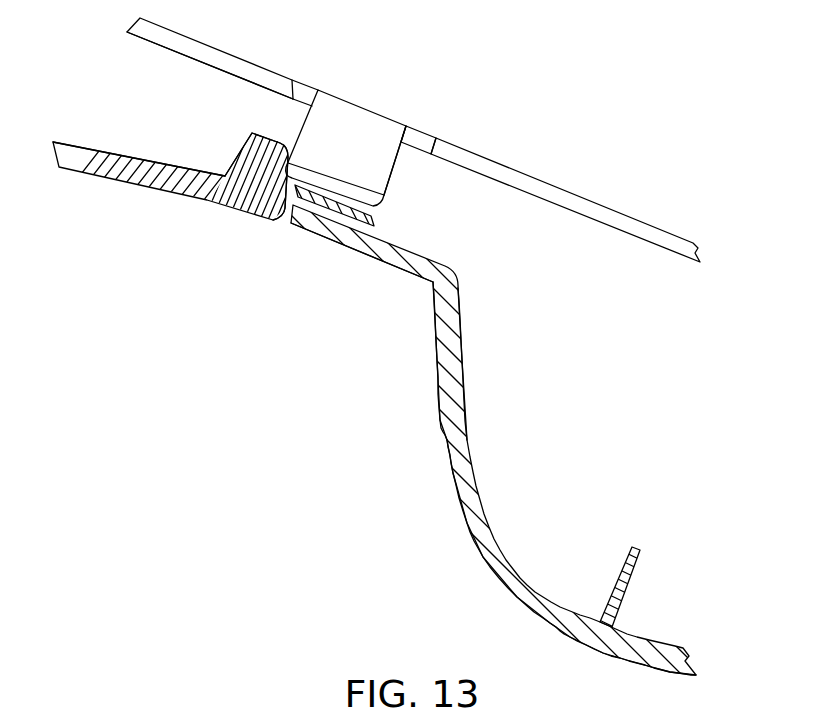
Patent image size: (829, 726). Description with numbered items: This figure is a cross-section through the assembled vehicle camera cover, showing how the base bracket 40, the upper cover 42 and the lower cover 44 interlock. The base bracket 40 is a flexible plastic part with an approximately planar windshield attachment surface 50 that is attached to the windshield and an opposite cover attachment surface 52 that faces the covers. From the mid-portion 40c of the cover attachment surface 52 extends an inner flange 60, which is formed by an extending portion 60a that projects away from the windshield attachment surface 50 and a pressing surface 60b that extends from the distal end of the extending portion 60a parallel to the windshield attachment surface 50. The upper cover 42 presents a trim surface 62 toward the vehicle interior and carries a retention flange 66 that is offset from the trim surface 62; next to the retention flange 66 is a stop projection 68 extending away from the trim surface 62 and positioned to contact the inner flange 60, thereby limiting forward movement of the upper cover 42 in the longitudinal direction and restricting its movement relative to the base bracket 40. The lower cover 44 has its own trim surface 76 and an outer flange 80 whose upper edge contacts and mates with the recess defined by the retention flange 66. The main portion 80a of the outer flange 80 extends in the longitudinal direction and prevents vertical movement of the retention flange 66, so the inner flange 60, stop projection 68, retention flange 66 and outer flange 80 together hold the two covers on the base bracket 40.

The base bracket 40 is at (599, 195).
The mid-portion 40c is at (492, 170).
The upper cover 42 is at (177, 204).
The lower cover 44 is at (434, 438).
The windshield attachment surface 50 is at (252, 62).
The cover attachment surface 52 is at (180, 54).
The inner flange 60 is at (338, 130).
The extending portion 60a is at (380, 152).
The pressing surface 60b is at (304, 208).
The trim surface 62 is at (107, 180).
The retention flange 66 is at (368, 219).
The stop projection 68 is at (257, 163).
The trim surface 76 is at (487, 567).
The outer flange 80 is at (363, 238).
The main portion 80a is at (405, 268).